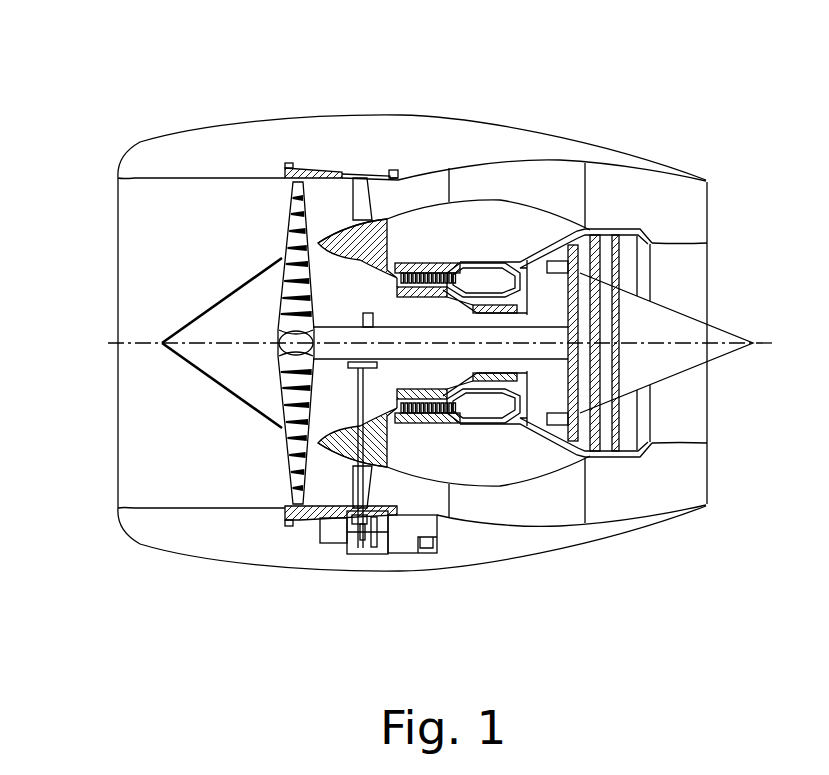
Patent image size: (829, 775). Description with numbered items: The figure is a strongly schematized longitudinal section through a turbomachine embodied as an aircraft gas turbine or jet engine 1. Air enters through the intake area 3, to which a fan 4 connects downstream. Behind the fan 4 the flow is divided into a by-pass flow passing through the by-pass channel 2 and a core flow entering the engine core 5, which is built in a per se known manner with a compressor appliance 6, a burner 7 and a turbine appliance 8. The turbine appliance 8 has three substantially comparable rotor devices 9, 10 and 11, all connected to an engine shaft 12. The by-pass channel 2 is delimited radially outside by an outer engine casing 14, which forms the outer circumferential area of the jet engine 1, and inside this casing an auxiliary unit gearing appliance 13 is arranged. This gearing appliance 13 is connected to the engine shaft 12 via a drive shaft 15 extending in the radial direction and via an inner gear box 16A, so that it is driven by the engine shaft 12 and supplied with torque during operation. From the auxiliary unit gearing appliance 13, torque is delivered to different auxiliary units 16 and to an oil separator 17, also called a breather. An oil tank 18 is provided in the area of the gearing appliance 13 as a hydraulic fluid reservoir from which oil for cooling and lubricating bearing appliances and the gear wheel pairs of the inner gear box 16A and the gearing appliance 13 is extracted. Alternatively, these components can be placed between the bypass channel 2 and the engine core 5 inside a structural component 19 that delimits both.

The jet engine 1 is at (156, 111).
The by-pass channel 2 is at (453, 181).
The intake area 3 is at (135, 260).
The fan 4 is at (297, 182).
The engine core 5 is at (287, 500).
The compressor appliance 6 is at (419, 260).
The burner 7 is at (490, 273).
The turbine appliance 8 is at (594, 234).
The rotor device 9 is at (585, 226).
The rotor device 10 is at (602, 235).
The rotor device 11 is at (613, 233).
The engine shaft 12 is at (547, 340).
The auxiliary unit gearing appliance 13 is at (368, 567).
The outer engine casing 14 is at (287, 566).
The drive shaft 15 is at (312, 512).
The auxiliary units 16 is at (416, 560).
The inner gear box 16A is at (338, 372).
The oil separator 17 is at (432, 549).
The oil tank 18 is at (333, 533).
The structural component 19 is at (280, 443).